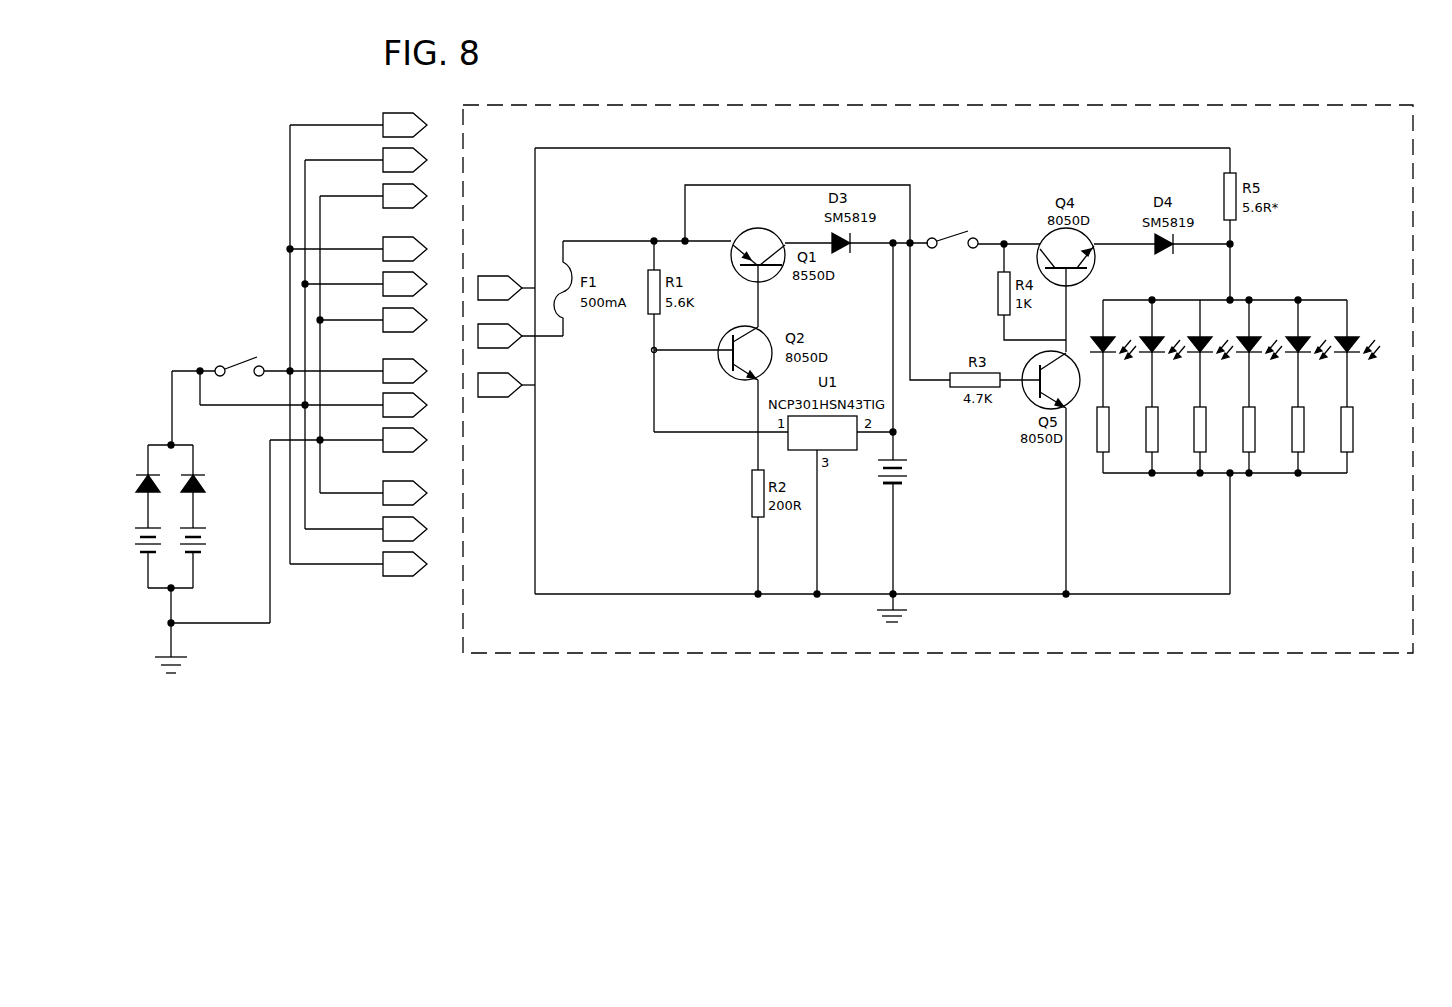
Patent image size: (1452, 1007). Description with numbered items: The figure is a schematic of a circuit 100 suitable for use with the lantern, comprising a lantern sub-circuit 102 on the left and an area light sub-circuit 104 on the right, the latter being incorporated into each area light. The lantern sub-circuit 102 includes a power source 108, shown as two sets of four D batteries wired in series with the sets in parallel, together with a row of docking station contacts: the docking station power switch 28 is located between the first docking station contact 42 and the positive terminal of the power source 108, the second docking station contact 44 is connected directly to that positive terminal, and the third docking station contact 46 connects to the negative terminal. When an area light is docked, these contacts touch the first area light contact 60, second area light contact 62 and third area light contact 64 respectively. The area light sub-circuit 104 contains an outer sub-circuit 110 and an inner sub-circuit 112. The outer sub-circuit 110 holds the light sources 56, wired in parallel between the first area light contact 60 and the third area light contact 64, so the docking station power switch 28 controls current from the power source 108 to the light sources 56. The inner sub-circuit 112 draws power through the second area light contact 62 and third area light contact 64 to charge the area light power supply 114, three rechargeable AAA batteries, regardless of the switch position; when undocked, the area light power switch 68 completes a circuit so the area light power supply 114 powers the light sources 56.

The circuit 100 is at (864, 76).
The lantern sub-circuit 102 is at (285, 655).
The area light sub-circuit 104 is at (967, 653).
The power source 108 is at (142, 561).
The outer sub-circuit 110 is at (1027, 596).
The inner sub-circuit 112 is at (932, 459).
The area light power supply 114 is at (880, 483).
The docking station power switch 28 is at (242, 360).
The first docking station contact 42 is at (382, 122).
The second docking station contact 44 is at (382, 157).
The third docking station contact 46 is at (382, 193).
The light sources 56 is at (1092, 338).
The first area light contact 60 is at (492, 276).
The second area light contact 62 is at (515, 346).
The third area light contact 64 is at (488, 398).
The area light power switch 68 is at (956, 237).